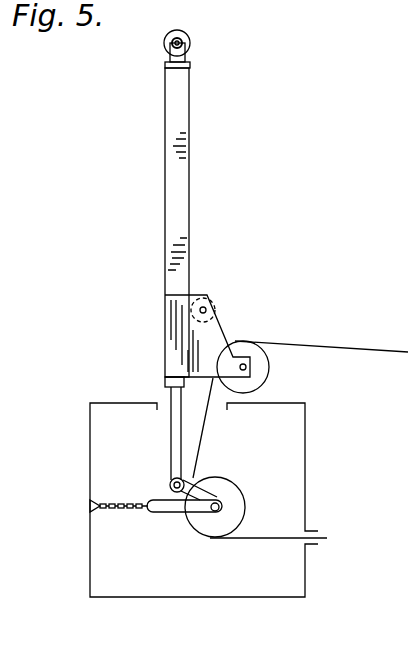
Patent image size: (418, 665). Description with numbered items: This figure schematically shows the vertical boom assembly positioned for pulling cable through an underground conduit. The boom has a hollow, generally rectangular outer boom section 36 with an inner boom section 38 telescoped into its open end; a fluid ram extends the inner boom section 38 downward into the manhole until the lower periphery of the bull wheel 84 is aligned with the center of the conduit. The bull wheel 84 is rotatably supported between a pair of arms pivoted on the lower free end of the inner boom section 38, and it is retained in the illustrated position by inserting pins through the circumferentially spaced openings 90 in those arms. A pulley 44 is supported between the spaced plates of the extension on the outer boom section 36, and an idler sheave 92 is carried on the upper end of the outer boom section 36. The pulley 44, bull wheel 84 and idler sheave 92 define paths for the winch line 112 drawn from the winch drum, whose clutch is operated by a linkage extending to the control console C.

The outer boom section 36 is at (173, 225).
The inner boom section 38 is at (173, 398).
The pulley 44 is at (263, 370).
The bull wheel 84 is at (228, 484).
The openings 90 is at (209, 300).
The idler sheave 92 is at (191, 43).
The winch line 112 is at (313, 343).
The control console C is at (117, 503).